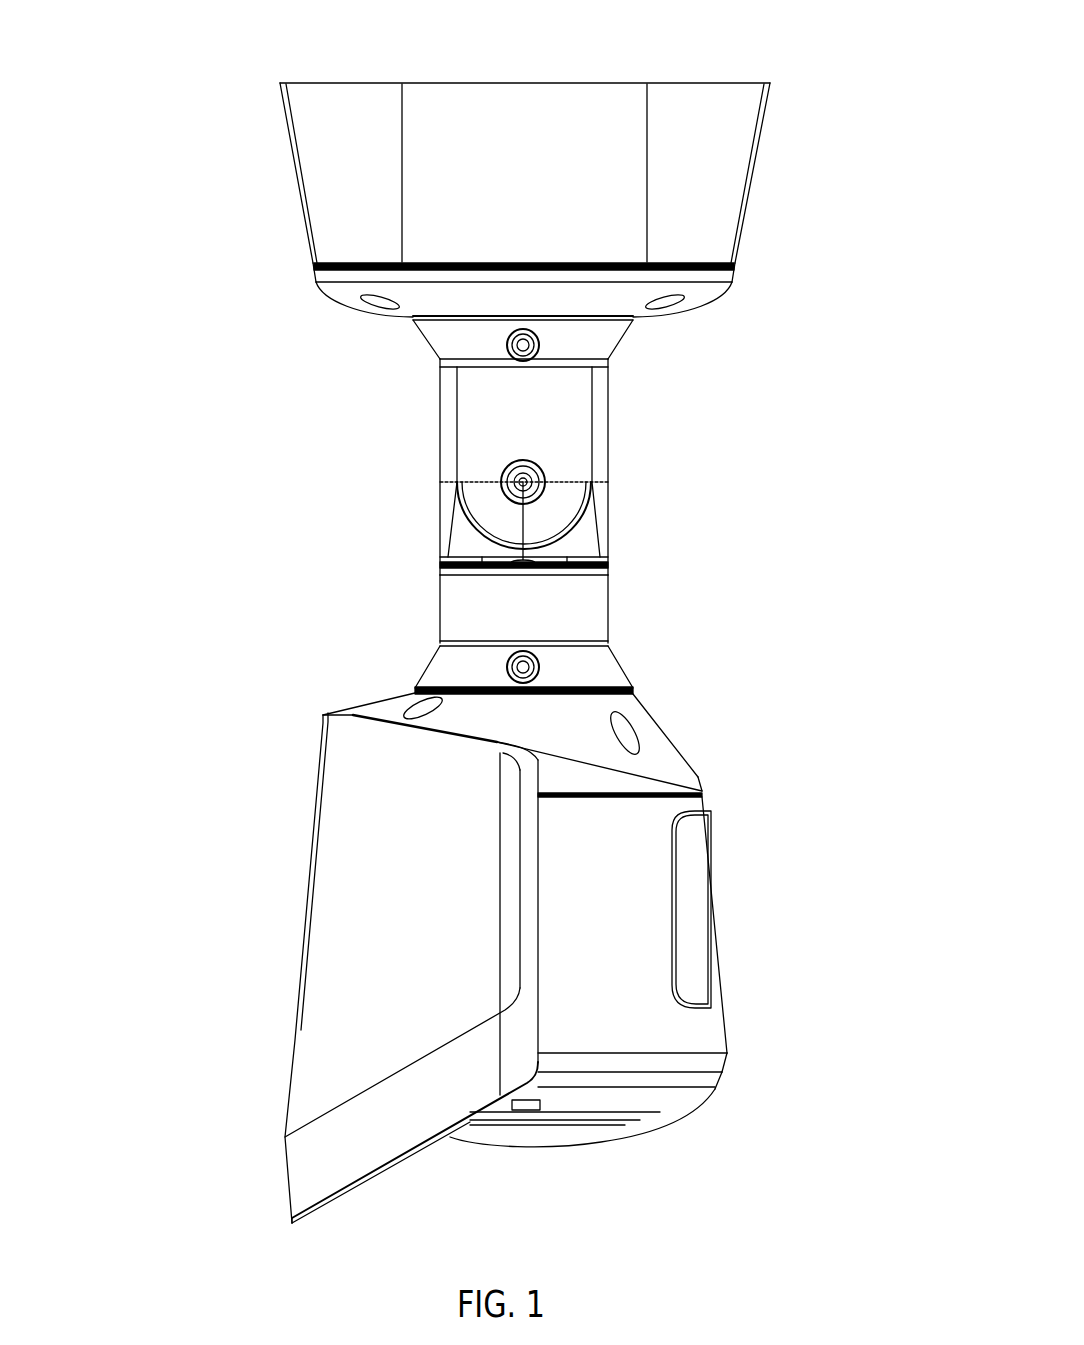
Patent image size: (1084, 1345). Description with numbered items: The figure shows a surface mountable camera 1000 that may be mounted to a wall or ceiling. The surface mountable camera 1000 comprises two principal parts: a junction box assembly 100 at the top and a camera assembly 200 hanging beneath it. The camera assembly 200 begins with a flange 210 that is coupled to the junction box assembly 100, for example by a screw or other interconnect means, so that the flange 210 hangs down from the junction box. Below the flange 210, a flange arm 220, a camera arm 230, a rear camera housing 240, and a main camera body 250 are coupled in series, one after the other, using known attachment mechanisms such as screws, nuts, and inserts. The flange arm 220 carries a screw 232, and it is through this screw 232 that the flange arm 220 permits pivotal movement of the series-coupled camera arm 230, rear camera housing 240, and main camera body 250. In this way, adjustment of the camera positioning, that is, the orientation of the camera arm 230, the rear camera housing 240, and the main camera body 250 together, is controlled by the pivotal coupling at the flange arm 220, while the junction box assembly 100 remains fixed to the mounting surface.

The surface mountable camera 1000 is at (225, 25).
The junction box assembly 100 is at (273, 268).
The camera assembly 200 is at (273, 1235).
The flange 210 is at (748, 282).
The flange arm 220 is at (658, 318).
The camera arm 230 is at (658, 563).
The screw 232 is at (503, 478).
The rear camera housing 240 is at (723, 685).
The main camera body 250 is at (723, 800).